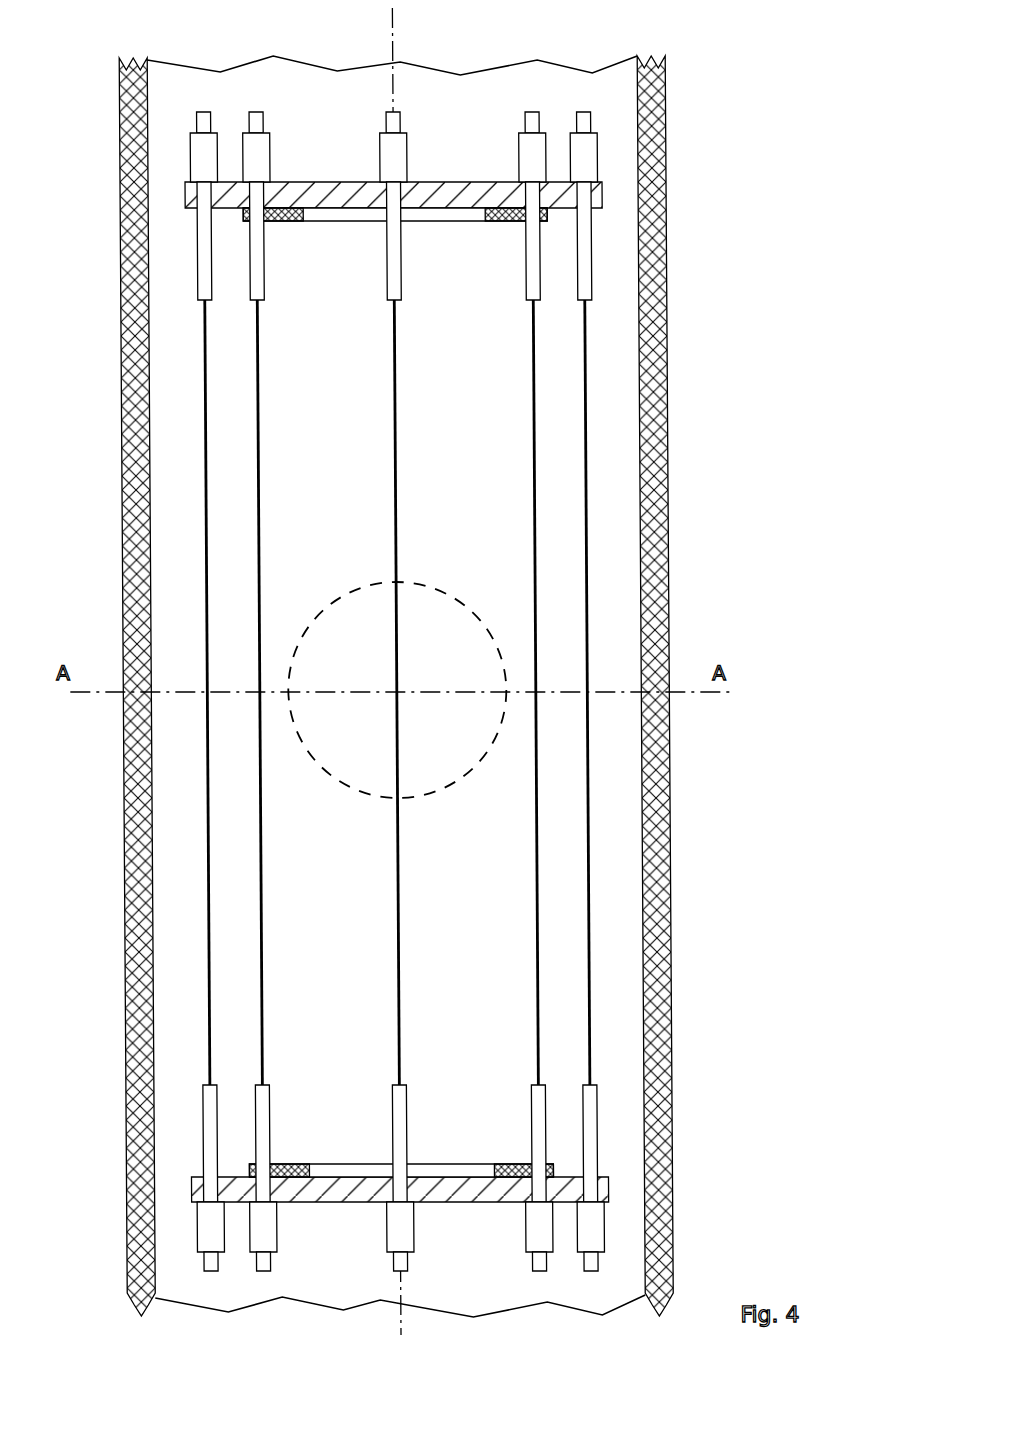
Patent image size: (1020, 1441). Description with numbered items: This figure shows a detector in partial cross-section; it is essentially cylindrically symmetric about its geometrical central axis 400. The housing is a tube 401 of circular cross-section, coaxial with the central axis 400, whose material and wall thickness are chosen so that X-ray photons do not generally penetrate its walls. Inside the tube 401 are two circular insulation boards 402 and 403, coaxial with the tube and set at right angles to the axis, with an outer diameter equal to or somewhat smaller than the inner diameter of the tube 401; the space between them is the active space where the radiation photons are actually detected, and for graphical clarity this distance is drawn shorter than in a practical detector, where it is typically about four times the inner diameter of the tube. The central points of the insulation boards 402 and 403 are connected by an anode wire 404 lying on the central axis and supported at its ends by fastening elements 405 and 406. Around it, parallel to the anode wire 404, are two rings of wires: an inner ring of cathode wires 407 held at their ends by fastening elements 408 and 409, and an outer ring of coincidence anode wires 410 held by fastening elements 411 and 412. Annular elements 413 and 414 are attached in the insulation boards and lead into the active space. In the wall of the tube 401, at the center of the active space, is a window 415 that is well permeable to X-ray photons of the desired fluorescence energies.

The geometrical central axis 400 is at (394, 30).
The tube 401 is at (666, 127).
The insulation board 402 is at (449, 182).
The insulation board 403 is at (450, 1203).
The anode wire 404 is at (395, 490).
The fastening element 405 is at (407, 138).
The fastening element 406 is at (407, 1247).
The cathode wires 407 is at (258, 489).
The fastening elements 408 is at (270, 143).
The fastening elements 409 is at (270, 1223).
The coincidence anode wires 410 is at (206, 502).
The fastening elements 411 is at (217, 142).
The fastening elements 412 is at (218, 1241).
The annular element 413 is at (291, 222).
The annular element 414 is at (287, 1164).
The window 415 is at (418, 588).